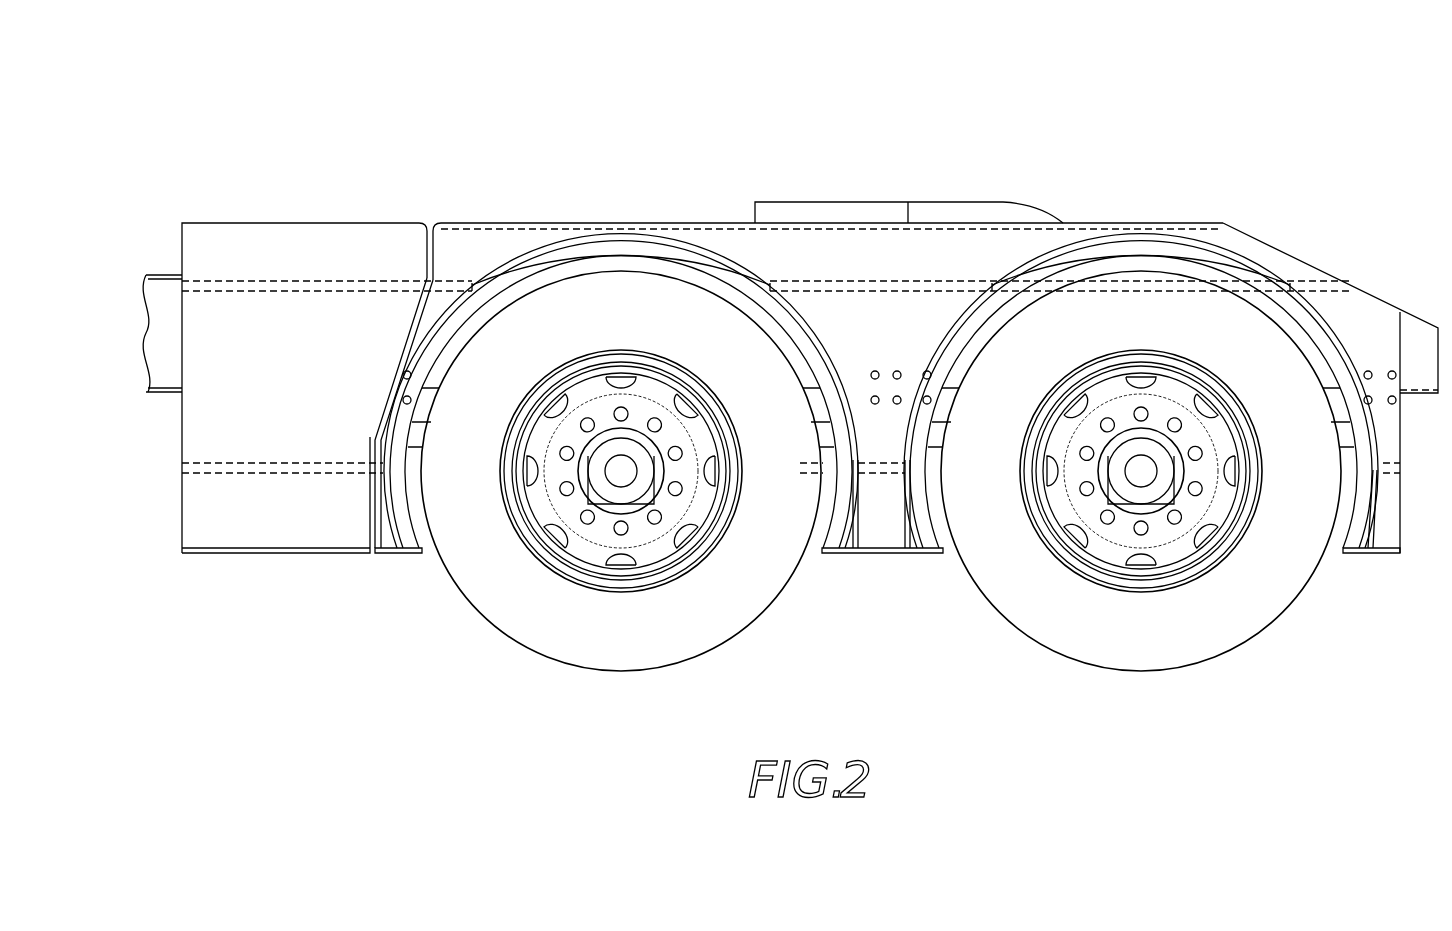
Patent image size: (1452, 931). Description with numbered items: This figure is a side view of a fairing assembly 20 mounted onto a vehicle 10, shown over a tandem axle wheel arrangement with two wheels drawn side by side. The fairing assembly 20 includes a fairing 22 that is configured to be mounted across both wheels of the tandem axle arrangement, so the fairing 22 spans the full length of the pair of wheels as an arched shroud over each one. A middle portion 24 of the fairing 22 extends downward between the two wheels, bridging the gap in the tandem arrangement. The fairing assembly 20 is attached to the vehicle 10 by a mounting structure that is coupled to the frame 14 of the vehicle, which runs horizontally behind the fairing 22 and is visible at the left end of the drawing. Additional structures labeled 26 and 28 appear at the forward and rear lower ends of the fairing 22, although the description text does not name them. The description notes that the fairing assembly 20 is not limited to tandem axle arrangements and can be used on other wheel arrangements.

The vehicle 10 is at (812, 135).
The frame 14 is at (162, 272).
The fairing assembly 20 is at (1363, 248).
The fairing 22 is at (697, 218).
The middle portion 24 is at (882, 557).
The front box / skirt panel 26 is at (282, 557).
The rear bracket 28 is at (1384, 557).